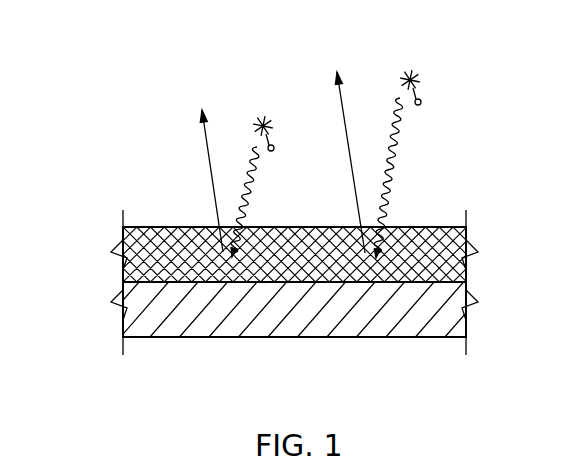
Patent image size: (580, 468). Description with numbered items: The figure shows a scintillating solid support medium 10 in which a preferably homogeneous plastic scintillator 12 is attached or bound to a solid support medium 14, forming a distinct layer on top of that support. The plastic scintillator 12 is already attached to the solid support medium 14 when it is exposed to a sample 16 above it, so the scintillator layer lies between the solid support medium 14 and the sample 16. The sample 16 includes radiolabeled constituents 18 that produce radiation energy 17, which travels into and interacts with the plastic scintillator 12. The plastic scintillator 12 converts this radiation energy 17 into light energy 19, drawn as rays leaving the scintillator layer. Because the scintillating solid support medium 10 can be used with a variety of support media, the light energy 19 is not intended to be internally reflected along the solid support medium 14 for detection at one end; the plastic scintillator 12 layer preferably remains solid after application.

The scintillating solid support medium 10 is at (274, 279).
The plastic scintillator 12 is at (435, 228).
The solid support medium 14 is at (373, 327).
The sample 16 is at (182, 138).
The radiation energy 17 is at (403, 148).
The radiolabeled constituents 18 is at (270, 112).
The light energy 19 is at (350, 168).